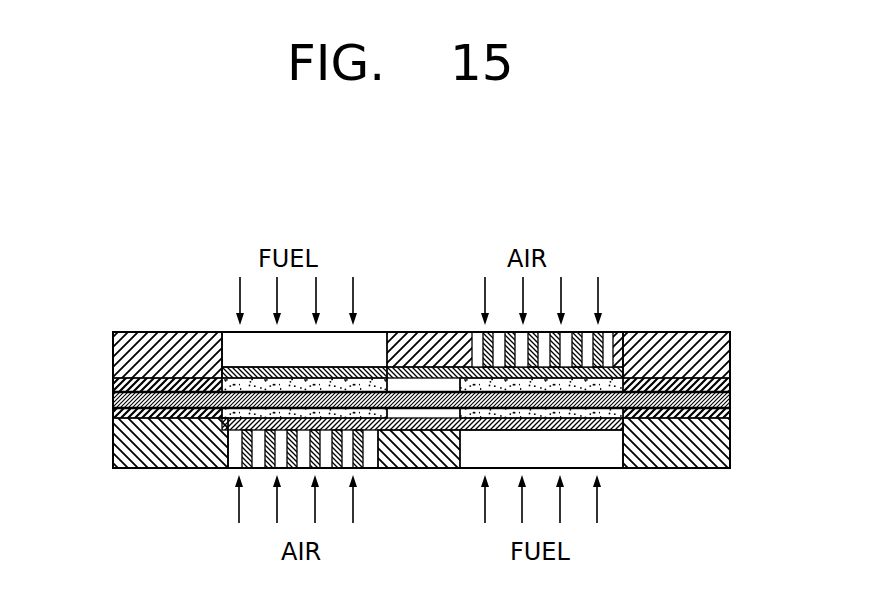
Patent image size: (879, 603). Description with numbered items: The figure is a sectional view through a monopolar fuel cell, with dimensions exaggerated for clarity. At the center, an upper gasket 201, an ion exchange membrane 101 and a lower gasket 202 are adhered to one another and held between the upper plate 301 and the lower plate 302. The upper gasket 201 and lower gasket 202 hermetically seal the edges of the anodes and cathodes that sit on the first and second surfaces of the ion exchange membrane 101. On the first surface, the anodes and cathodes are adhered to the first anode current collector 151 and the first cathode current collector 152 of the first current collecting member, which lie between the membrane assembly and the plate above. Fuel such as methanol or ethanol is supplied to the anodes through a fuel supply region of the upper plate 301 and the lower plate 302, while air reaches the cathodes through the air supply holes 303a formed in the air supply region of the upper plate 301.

The ion exchange membrane 101 is at (730, 400).
The upper gasket 201 is at (430, 388).
The lower gasket 202 is at (730, 413).
The first anode current collector 151 is at (248, 370).
The first cathode current collector 152 is at (607, 375).
The upper plate 301 is at (730, 343).
The lower plate 302 is at (376, 342).
The air supply holes 303a is at (586, 345).